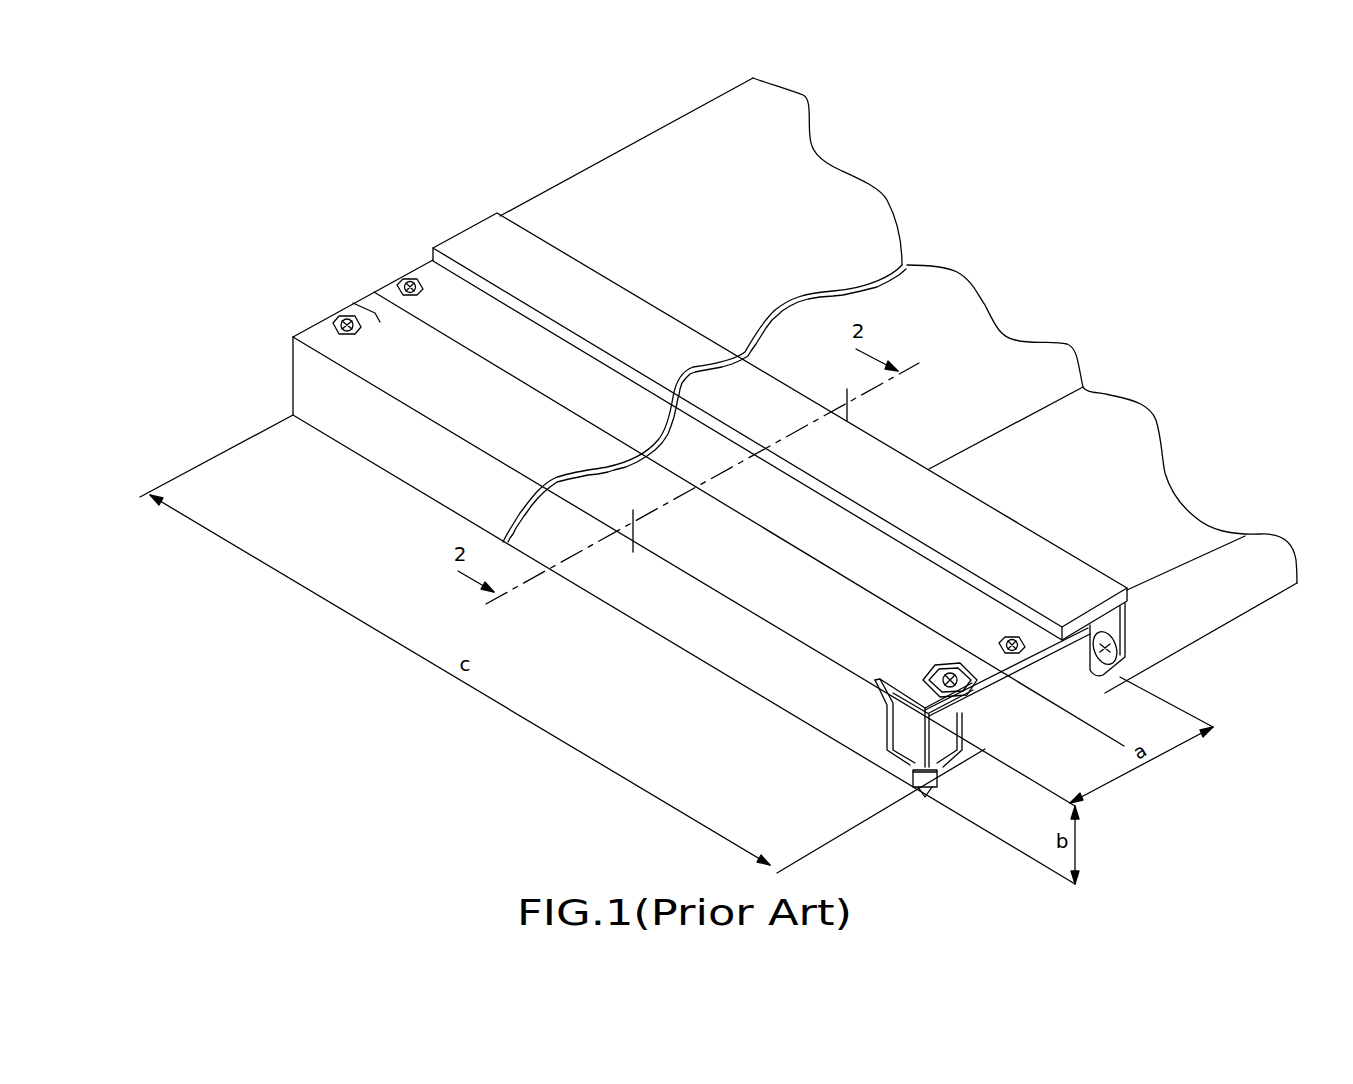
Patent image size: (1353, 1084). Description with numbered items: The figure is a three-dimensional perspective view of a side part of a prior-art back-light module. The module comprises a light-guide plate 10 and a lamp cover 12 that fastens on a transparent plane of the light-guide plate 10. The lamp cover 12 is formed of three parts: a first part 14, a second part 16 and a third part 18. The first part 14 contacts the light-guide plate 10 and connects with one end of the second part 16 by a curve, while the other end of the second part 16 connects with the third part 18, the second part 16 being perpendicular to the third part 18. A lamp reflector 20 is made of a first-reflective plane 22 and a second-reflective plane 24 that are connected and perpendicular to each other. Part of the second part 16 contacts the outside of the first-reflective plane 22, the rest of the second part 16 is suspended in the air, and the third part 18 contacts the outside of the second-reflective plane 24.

The light-guide plate 10 is at (1007, 381).
The lamp cover 12 is at (870, 640).
The first part 14 is at (1163, 698).
The second part 16 is at (1107, 730).
The third part 18 is at (1028, 777).
The lamp reflector 20 is at (898, 727).
The first-reflective plane 22 is at (923, 690).
The second-reflective plane 24 is at (922, 740).